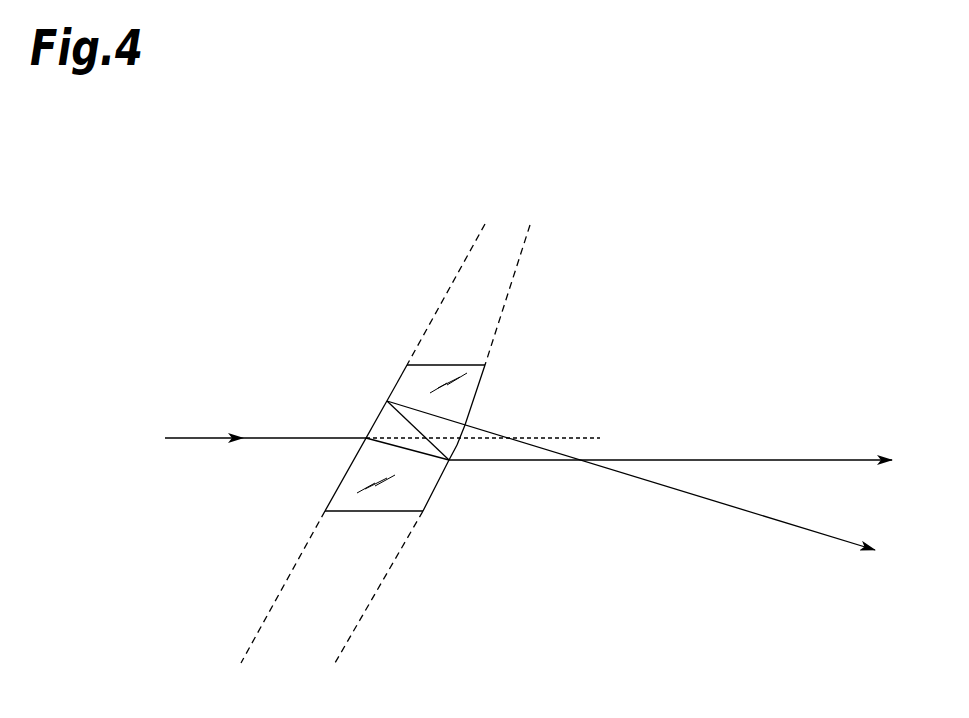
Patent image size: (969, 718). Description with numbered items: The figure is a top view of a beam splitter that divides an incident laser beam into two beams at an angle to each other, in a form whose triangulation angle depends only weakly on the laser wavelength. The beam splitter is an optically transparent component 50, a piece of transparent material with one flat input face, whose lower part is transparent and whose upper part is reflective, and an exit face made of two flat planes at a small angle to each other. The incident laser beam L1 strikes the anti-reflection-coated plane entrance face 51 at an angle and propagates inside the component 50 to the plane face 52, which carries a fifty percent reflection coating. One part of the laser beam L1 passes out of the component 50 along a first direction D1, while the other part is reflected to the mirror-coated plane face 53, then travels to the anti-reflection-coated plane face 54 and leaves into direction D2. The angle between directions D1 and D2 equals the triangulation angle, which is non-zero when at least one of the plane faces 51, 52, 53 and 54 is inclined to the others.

The optically transparent component 50 is at (415, 492).
The plane entrance face 51 is at (366, 438).
The plane face with 50% reflection coating 52 is at (449, 460).
The plane face with mirror coating 53 is at (387, 401).
The plane face with anti-reflection coating 54 is at (466, 425).
The incident laser beam L1 is at (283, 437).
The first direction D1 is at (837, 458).
The second direction D2 is at (802, 530).